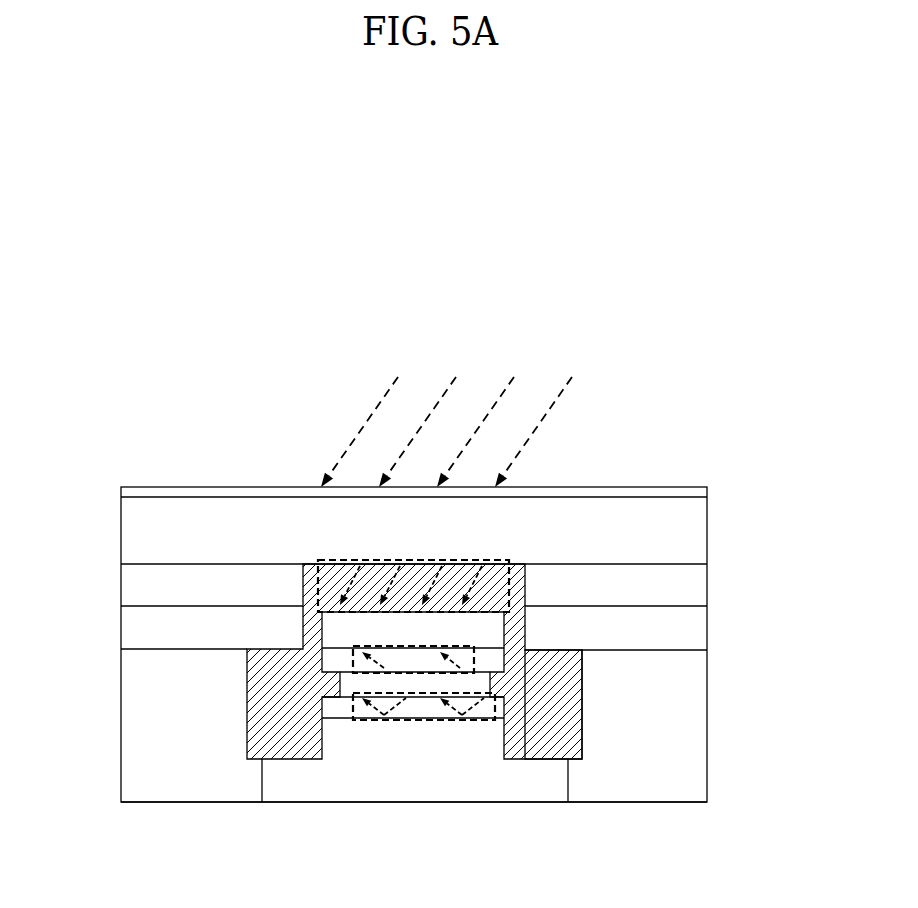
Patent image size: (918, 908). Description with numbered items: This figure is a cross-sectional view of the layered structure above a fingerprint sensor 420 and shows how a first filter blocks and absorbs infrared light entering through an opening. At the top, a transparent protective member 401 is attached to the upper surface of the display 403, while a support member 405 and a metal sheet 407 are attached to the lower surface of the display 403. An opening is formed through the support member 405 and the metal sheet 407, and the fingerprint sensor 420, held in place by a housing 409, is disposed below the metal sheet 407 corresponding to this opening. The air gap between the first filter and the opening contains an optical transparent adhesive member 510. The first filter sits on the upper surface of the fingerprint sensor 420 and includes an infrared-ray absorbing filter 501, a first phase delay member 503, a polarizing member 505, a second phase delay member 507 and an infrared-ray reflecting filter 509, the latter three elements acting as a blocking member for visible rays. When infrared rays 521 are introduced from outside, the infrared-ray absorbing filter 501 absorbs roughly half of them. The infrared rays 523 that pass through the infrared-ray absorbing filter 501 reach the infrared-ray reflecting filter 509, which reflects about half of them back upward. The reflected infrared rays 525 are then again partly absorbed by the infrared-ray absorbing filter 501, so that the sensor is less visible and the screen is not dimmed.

The transparent protective member 401 is at (707, 493).
The display 403 is at (707, 530).
The support member 405 is at (707, 585).
The metal sheet 407 is at (707, 628).
The housing 409 is at (707, 676).
The fingerprint sensor 420 is at (553, 802).
The optical transparent adhesive member 510 is at (567, 729).
The infrared rays 521 is at (312, 593).
The infrared-ray absorbing filter 501 is at (332, 622).
The first phase delay member 503 is at (330, 657).
The polarizing member 505 is at (345, 682).
The second phase delay member 507 is at (337, 705).
The infrared-ray reflecting filter 509 is at (337, 743).
The infrared rays 525 is at (427, 673).
The infrared rays 523 is at (483, 720).